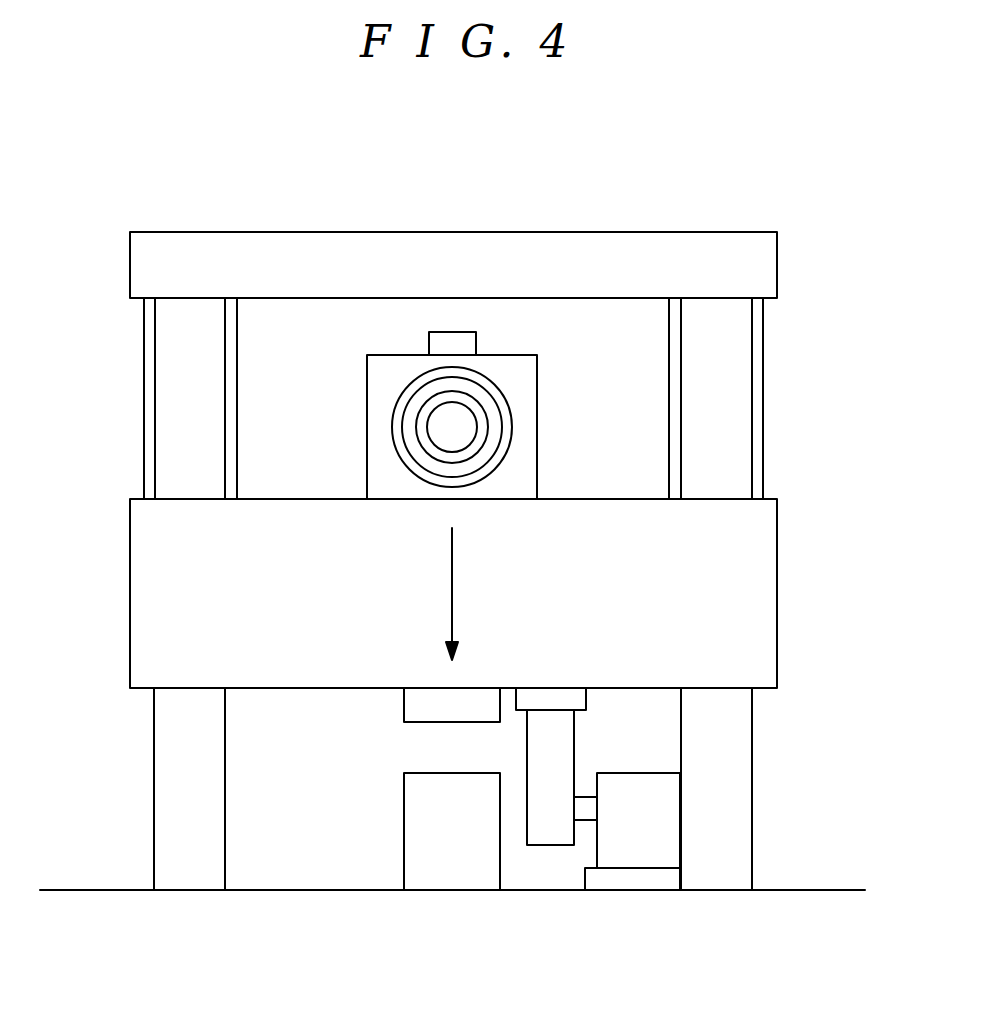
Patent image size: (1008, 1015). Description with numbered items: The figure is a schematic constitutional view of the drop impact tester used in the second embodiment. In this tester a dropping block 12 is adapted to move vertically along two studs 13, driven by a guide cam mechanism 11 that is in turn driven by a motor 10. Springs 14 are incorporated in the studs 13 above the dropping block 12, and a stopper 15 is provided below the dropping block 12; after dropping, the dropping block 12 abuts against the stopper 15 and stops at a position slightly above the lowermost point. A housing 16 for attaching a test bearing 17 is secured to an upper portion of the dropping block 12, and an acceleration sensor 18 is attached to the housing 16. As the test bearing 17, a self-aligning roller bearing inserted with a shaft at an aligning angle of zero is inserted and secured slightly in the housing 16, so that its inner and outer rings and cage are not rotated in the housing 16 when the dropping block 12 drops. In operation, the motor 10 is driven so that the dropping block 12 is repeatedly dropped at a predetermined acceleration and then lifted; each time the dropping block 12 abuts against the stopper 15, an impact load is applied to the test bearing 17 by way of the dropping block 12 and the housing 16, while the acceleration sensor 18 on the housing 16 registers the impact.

The motor 10 is at (662, 823).
The guide cam mechanism 11 is at (560, 748).
The dropping block 12 is at (767, 587).
The studs 13 is at (178, 789).
The springs 14 is at (758, 398).
The stopper 15 is at (458, 875).
The housing 16 is at (387, 374).
The test bearing 17 is at (398, 437).
The acceleration sensor 18 is at (455, 342).